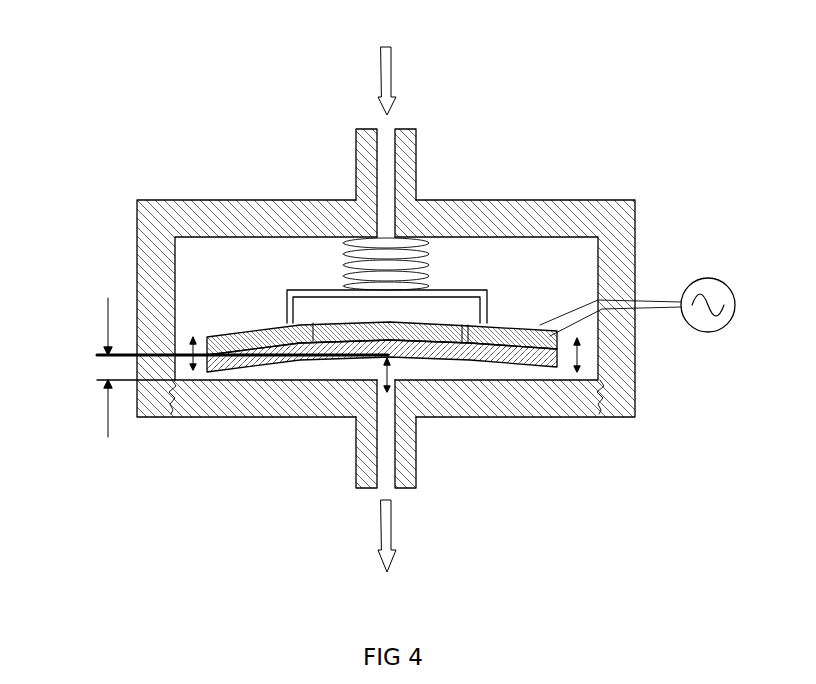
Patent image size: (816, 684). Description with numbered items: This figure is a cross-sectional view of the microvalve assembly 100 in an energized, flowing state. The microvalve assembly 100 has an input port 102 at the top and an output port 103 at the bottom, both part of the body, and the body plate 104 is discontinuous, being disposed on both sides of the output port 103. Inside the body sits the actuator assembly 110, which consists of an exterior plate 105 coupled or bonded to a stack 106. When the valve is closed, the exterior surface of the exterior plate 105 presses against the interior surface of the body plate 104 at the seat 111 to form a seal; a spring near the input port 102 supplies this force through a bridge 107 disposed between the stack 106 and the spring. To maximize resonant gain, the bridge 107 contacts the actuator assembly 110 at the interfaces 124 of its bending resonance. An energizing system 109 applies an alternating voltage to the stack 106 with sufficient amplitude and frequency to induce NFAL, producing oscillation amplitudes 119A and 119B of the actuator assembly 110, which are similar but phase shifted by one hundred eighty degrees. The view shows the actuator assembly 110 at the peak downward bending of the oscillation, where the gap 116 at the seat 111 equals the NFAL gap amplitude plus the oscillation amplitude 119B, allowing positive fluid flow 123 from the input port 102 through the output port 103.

The microvalve assembly 100 is at (543, 95).
The input port 102 is at (372, 147).
The output port 103 is at (377, 458).
The body plate 104 is at (257, 395).
The exterior plate 105 is at (512, 353).
The stack 106 is at (557, 343).
The bridge 107 is at (318, 292).
The energizing system 109 is at (717, 277).
The actuator assembly 110 is at (425, 455).
The seat 111 is at (375, 381).
The gap 116 is at (131, 386).
The oscillation amplitude 119A is at (185, 343).
The oscillation amplitude 119B is at (390, 370).
The positive fluid flow 123 is at (385, 307).
The interfaces 124 is at (287, 323).